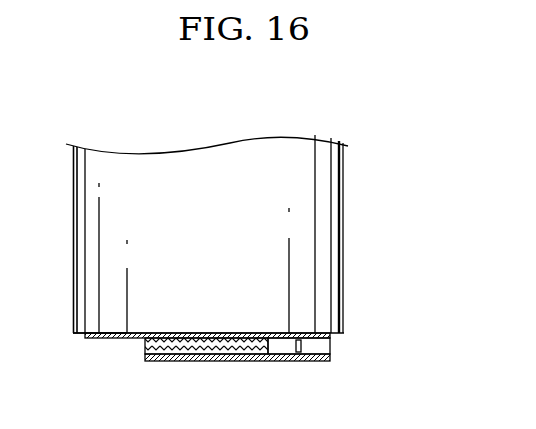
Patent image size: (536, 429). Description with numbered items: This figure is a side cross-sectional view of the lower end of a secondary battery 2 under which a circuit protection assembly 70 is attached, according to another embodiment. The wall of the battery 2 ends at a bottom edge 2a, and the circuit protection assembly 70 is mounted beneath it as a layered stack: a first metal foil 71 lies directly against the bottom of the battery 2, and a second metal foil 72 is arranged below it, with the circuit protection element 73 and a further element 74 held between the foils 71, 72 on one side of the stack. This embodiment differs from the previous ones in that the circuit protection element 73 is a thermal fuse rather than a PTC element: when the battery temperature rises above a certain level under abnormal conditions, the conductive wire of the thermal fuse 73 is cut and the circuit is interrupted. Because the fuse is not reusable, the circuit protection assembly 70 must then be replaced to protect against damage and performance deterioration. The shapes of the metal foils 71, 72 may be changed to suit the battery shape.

The tub 2 is at (298, 195).
The bottom end of tub wall 2a is at (107, 333).
The circuit protection assembly 70 is at (288, 368).
The first metal foil 71 is at (330, 335).
The second metal foil 72 is at (258, 358).
The circuit protection element 73 is at (318, 347).
The sensor element 74 is at (318, 357).